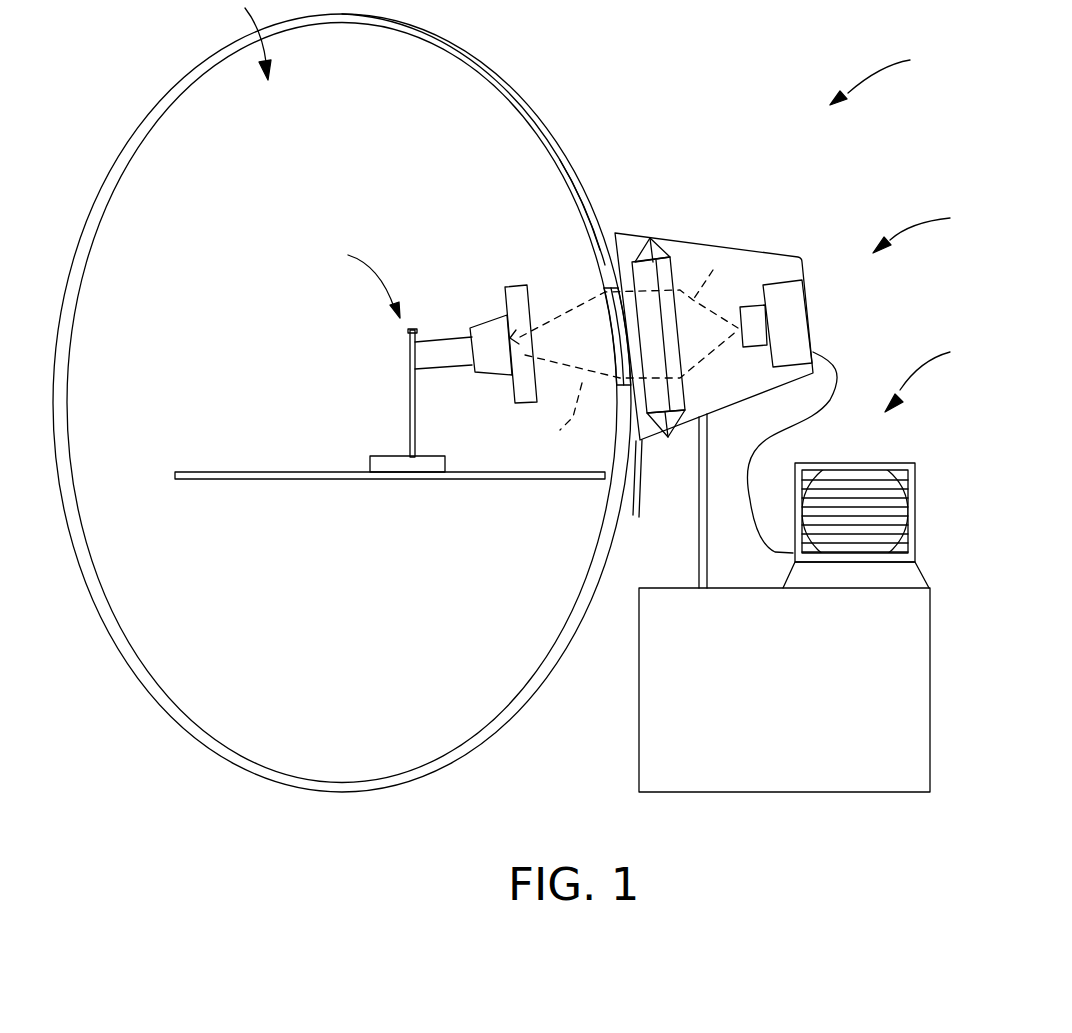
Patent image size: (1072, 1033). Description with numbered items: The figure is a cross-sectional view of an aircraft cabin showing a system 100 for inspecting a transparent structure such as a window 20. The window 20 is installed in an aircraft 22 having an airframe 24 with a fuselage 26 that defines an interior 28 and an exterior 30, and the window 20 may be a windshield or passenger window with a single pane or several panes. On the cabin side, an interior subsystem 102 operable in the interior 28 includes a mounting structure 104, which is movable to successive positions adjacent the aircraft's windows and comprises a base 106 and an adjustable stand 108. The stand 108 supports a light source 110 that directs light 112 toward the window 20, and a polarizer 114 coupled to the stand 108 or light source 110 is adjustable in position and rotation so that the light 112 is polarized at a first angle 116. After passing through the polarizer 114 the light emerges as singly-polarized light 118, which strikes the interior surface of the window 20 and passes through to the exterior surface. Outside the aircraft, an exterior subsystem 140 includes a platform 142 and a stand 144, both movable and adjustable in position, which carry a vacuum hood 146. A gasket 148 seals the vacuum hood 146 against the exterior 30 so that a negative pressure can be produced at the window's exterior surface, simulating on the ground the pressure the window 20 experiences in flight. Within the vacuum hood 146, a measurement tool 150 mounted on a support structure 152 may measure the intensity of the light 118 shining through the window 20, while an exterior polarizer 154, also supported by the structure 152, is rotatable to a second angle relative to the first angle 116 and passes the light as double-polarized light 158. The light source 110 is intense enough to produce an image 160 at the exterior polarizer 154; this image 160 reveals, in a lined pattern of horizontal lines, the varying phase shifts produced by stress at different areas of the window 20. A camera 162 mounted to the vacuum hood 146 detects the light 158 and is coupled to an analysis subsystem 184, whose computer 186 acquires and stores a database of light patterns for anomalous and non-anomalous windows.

The window 20 is at (605, 290).
The aircraft 22 is at (148, 116).
The airframe 24 is at (498, 83).
The fuselage 26 is at (543, 132).
The interior 28 is at (242, 40).
The exterior 30 is at (593, 240).
The system 100 is at (891, 76).
The interior subsystem 102 is at (352, 277).
The mounting structure 104 is at (390, 455).
The base 106 is at (272, 479).
The adjustable stand 108 is at (408, 380).
The light source 110 is at (475, 330).
The light 112 is at (505, 385).
The polarizer 114 is at (510, 285).
The first angle 116 is at (860, 482).
The singly-polarized light 118 is at (624, 368).
The exterior subsystem 140 is at (934, 230).
The platform 142 is at (867, 675).
The stand 144 is at (705, 533).
The vacuum hood 146 is at (753, 250).
The gasket 148 is at (637, 515).
The measurement tool 150 is at (645, 245).
The support structure 152 is at (645, 450).
The exterior polarizer 154 is at (668, 250).
The double-polarized light 158 is at (729, 279).
The image 160 is at (883, 510).
The camera 162 is at (790, 330).
The analysis subsystem 184 is at (871, 445).
The computer 186 is at (903, 573).